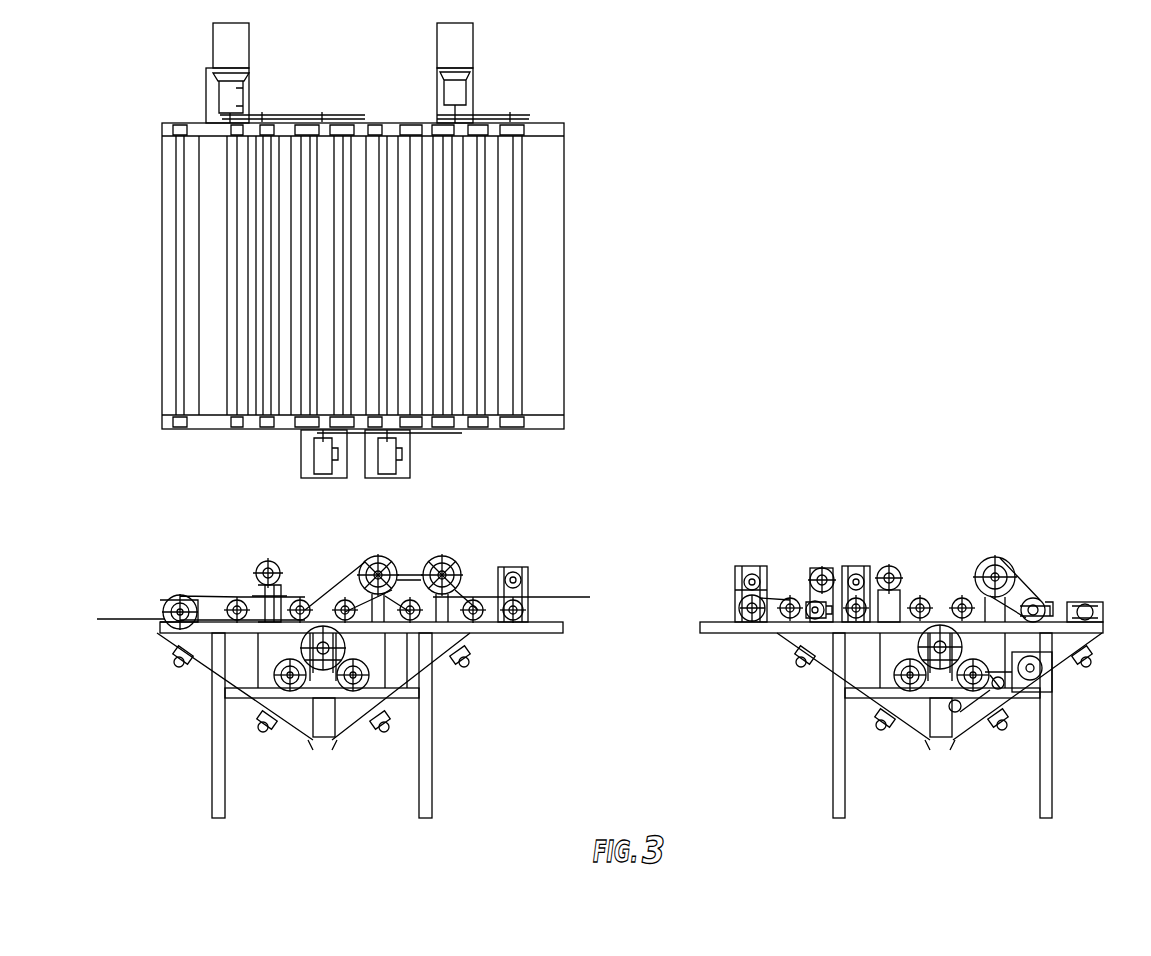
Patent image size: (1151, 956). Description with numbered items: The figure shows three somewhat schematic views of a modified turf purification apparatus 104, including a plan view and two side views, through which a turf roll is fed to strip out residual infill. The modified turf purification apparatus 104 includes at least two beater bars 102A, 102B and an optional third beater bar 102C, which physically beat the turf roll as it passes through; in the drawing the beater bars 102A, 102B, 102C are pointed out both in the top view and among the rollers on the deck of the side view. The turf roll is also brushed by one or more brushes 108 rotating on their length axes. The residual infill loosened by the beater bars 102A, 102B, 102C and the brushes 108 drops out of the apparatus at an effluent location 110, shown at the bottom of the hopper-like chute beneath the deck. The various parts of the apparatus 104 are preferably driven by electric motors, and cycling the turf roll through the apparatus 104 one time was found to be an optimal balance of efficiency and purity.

The modified turf purification apparatus 104 is at (594, 558).
The beater bar 102A is at (267, 398).
The beater bar 102B is at (375, 397).
The beater bar 102C is at (440, 402).
The brush 108 is at (318, 742).
The effluent location 110 is at (940, 746).